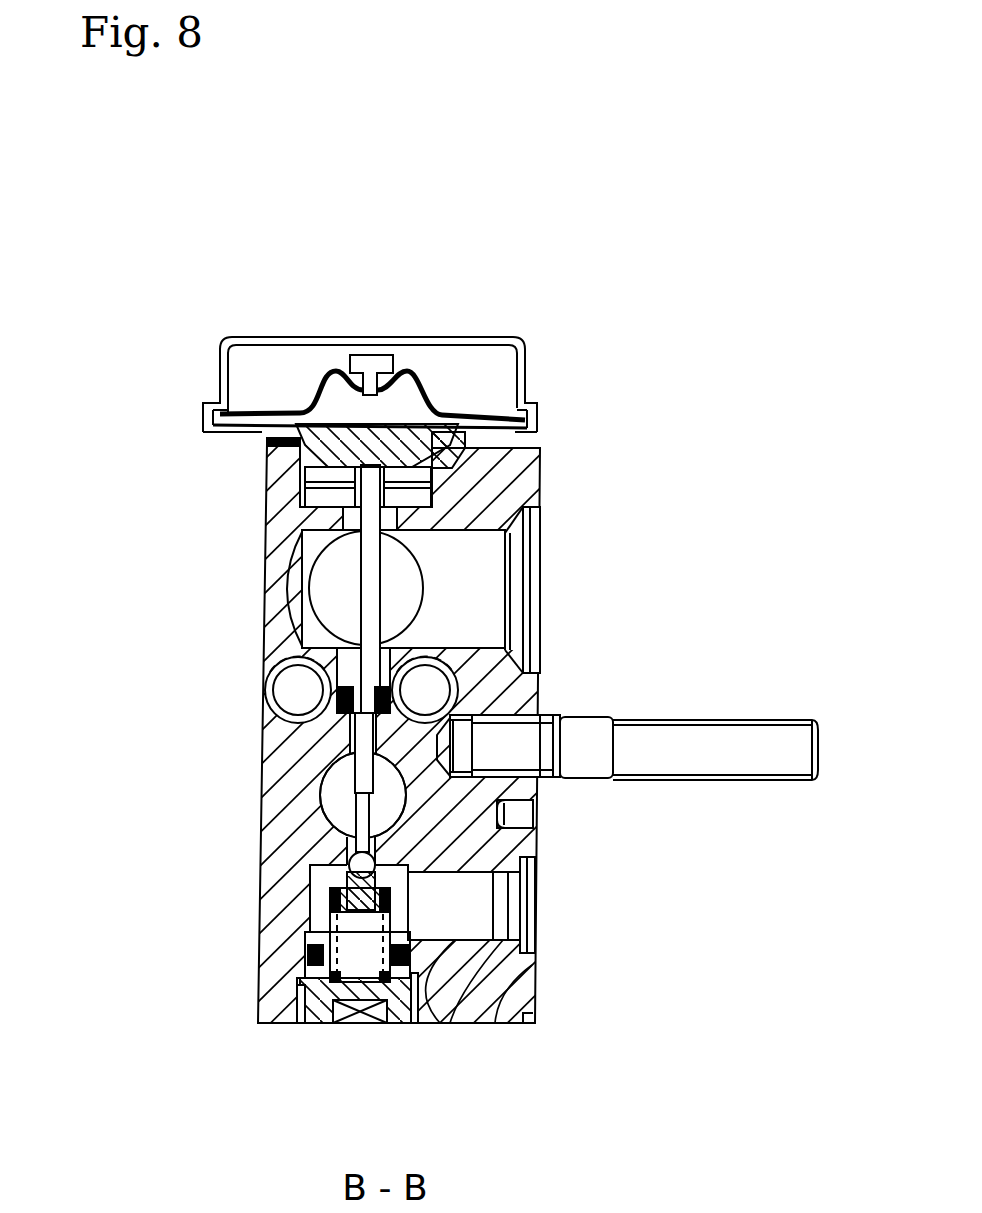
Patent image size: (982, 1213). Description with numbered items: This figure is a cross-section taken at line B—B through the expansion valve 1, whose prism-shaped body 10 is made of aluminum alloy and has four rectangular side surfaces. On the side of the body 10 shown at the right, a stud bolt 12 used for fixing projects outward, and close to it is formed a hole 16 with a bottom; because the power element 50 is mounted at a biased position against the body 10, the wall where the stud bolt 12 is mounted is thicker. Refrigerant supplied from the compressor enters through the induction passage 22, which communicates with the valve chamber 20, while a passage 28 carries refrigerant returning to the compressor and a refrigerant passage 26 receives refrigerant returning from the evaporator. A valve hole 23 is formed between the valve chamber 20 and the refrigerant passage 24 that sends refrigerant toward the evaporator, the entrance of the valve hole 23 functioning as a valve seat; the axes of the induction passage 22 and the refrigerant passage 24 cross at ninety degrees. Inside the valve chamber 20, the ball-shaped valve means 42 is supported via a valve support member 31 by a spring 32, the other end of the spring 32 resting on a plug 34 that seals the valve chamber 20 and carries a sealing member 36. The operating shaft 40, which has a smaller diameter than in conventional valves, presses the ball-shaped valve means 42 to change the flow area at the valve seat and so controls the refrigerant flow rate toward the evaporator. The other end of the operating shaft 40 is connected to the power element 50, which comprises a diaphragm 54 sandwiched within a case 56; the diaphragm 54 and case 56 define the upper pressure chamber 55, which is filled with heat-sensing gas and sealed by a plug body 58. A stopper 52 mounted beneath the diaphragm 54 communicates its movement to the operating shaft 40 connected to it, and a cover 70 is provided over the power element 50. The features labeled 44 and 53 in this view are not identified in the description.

The expansion valve 1 is at (618, 230).
The body 10 is at (257, 994).
The stud bolt 12 is at (636, 741).
The hole with a bottom 16 is at (520, 818).
The valve chamber 20 is at (497, 1022).
The induction passage 22 is at (463, 917).
The valve hole 23 is at (365, 812).
The refrigerant passage 24 is at (322, 792).
The refrigerant passage 26 is at (323, 596).
The passage 28 is at (498, 583).
The valve support member 31 is at (330, 872).
The spring 32 is at (317, 918).
The plug 34 is at (320, 1021).
The sealing member 36 is at (440, 1023).
The operating shaft 40 is at (372, 567).
The ball-shaped valve means 42 is at (349, 862).
The guide balls 44 is at (340, 708).
The power element 50 is at (495, 382).
The stopper 52 is at (298, 467).
The opening 53 is at (477, 448).
The diaphragm 54 is at (253, 402).
The upper pressure chamber 55 is at (397, 403).
The case 56 is at (313, 406).
The plug body 58 is at (360, 371).
The cover 70 is at (378, 337).